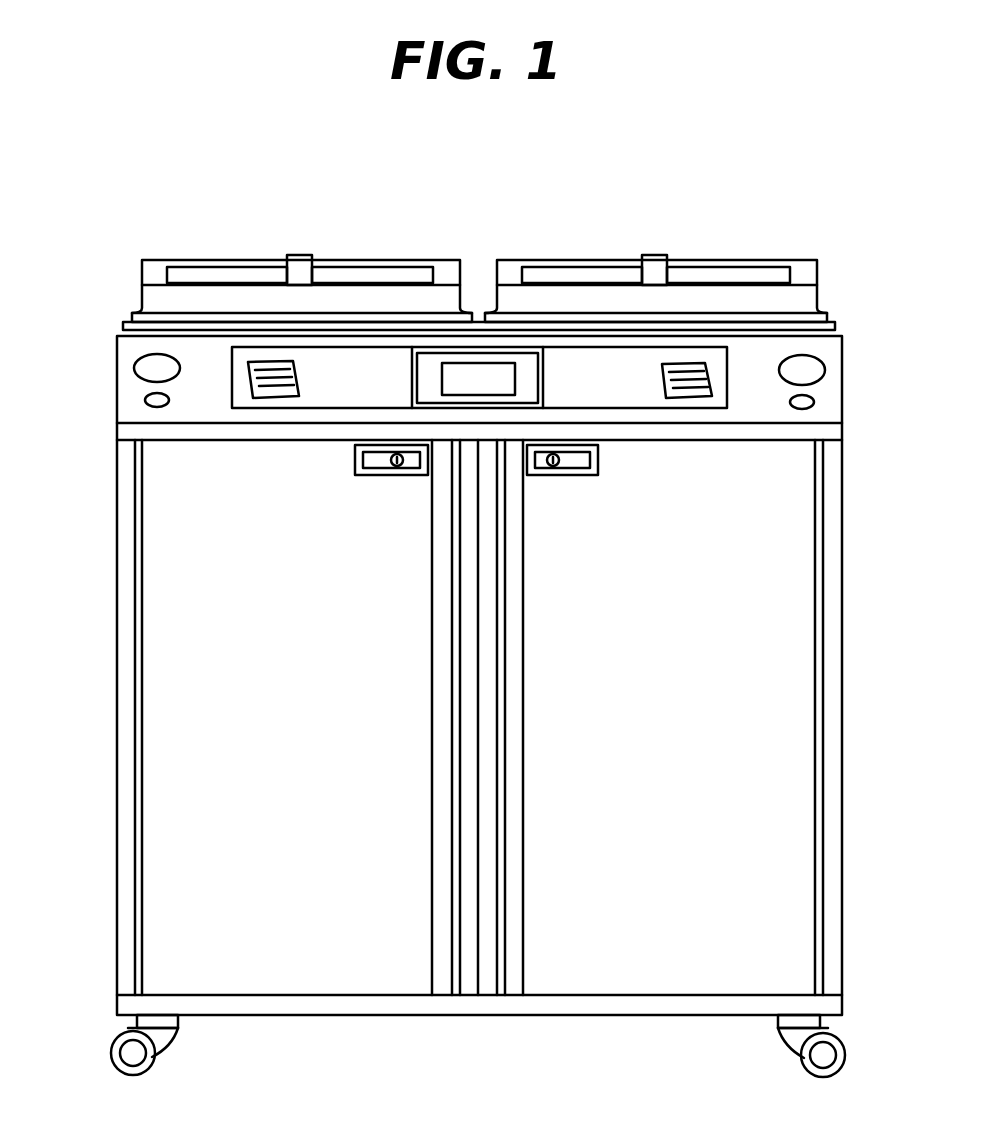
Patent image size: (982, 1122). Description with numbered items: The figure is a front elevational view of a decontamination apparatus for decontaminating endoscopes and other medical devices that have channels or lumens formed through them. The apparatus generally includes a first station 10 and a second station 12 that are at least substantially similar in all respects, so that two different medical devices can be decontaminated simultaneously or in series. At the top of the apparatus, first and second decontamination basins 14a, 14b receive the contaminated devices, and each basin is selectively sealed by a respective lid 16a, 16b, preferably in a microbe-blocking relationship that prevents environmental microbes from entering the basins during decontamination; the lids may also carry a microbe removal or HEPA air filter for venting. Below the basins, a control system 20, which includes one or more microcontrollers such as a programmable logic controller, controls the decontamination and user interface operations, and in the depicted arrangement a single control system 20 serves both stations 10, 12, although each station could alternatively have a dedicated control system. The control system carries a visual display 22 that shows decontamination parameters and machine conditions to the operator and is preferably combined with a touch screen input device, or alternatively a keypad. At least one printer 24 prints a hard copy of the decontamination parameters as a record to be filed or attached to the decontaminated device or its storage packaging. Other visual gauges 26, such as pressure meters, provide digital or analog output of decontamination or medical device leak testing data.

The first station 10 is at (133, 173).
The second station 12 is at (485, 173).
The first decontamination basin 14a is at (236, 235).
The second decontamination basin 14b is at (716, 232).
The lid 16a is at (305, 254).
The lid 16b is at (646, 254).
The control system 20 is at (568, 384).
The visual display 22 is at (460, 377).
The printer 24 is at (299, 386).
The visual gauges 26 is at (152, 372).